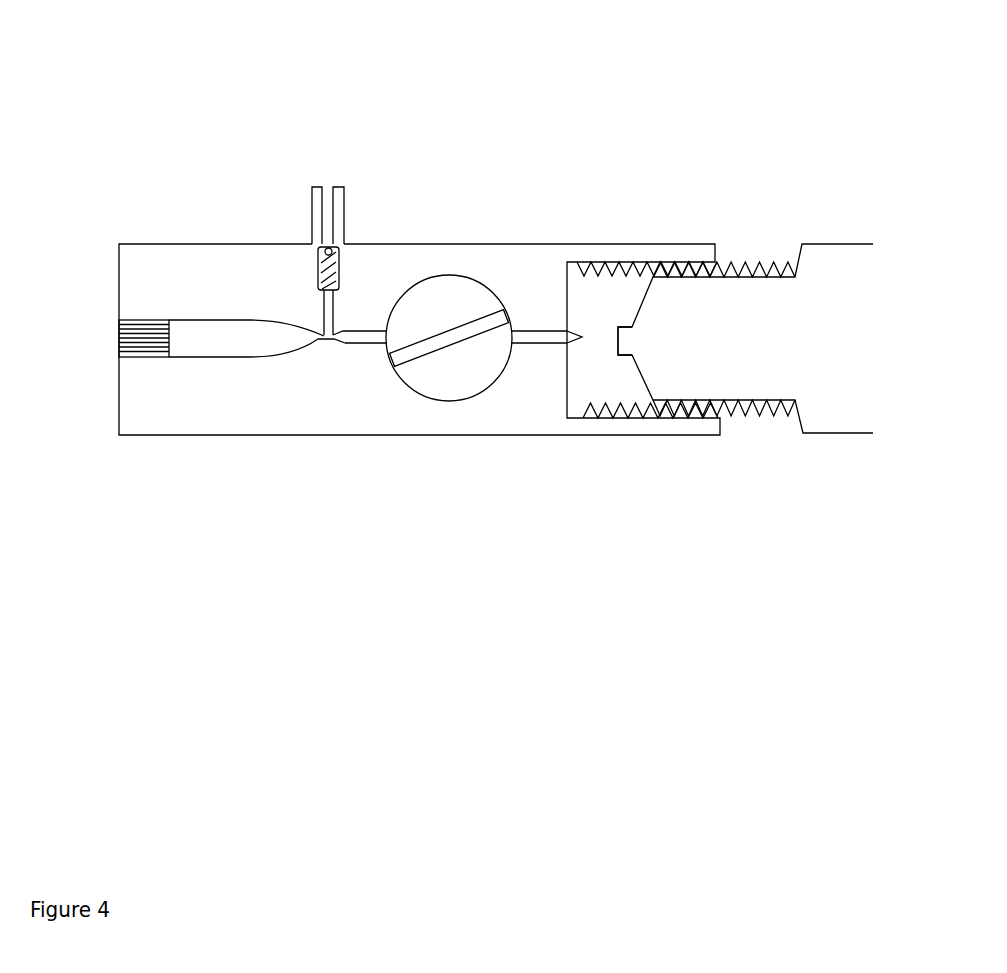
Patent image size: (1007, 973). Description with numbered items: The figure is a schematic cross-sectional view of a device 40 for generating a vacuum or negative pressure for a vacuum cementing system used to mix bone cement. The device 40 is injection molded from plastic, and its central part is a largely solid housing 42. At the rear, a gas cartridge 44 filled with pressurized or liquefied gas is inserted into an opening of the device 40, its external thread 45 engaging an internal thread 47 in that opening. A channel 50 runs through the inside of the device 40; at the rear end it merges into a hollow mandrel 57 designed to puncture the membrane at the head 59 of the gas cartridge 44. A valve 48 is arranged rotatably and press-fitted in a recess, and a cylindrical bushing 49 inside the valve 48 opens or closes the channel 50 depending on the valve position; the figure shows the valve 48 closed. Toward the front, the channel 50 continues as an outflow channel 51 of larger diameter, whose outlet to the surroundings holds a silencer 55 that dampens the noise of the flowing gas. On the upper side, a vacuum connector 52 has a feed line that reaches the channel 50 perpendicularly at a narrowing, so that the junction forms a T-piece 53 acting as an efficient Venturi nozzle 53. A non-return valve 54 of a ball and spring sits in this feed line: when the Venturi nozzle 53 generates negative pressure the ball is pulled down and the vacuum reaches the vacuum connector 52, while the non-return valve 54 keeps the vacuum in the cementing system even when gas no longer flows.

The device 40 is at (159, 59).
The housing 42 is at (498, 232).
The gas cartridge 44 is at (739, 356).
The external thread 45 is at (770, 262).
The internal thread 47 is at (705, 251).
The valve 48 is at (457, 292).
The bushing 49 is at (423, 345).
The channel 50 is at (532, 337).
The outflow channel 51 is at (222, 338).
The vacuum connector 52 is at (324, 176).
The T-piece / Venturi nozzle 53 is at (323, 334).
The non-return valve 54 is at (316, 236).
The silencer 55 is at (144, 356).
The hollow mandrel 57 is at (574, 321).
The head 59 is at (623, 326).